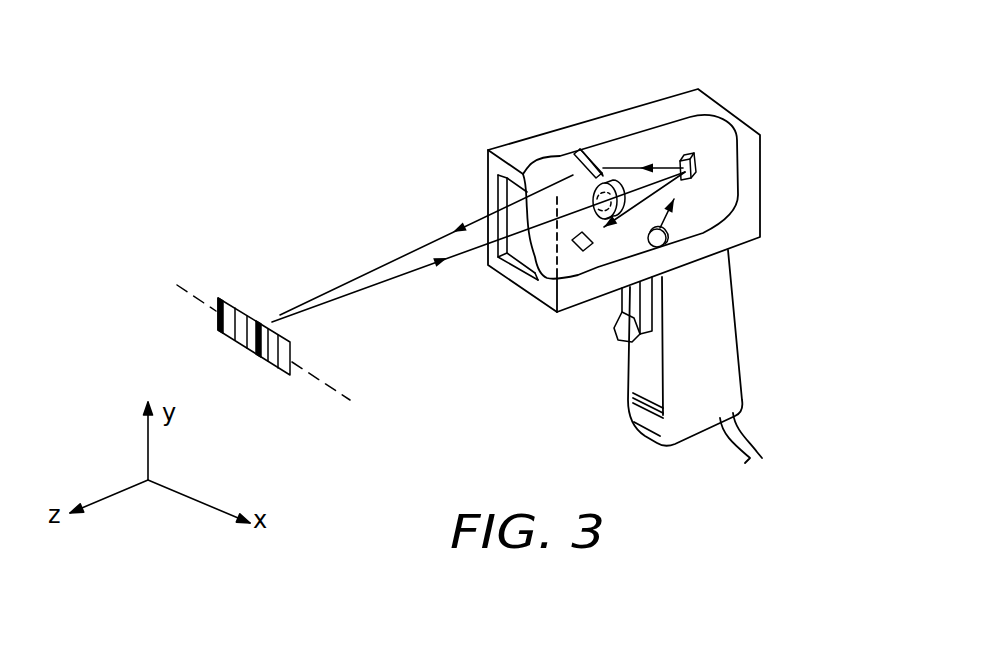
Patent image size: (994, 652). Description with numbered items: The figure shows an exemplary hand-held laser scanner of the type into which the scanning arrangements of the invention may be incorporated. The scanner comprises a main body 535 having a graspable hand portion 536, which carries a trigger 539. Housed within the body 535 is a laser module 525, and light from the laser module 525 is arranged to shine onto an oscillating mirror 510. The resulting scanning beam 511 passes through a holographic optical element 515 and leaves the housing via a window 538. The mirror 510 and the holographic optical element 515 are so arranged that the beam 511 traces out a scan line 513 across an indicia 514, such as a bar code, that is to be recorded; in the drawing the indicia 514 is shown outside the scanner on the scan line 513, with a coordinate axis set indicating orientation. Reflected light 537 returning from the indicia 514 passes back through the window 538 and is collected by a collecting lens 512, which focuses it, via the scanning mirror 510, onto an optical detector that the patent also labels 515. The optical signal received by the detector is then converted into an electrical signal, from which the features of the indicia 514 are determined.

The main body 535 is at (577, 120).
The window 538 is at (508, 197).
The reflected light 537 is at (400, 275).
The holographic optical element 515 is at (570, 152).
The collecting lens 512 is at (622, 184).
The scanning beam 511 is at (657, 166).
The oscillating mirror 510 is at (697, 155).
The laser module 525 is at (675, 228).
The indicia 514 is at (252, 314).
The scan line 513 is at (182, 283).
The graspable hand portion 536 is at (735, 318).
The trigger 539 is at (618, 340).